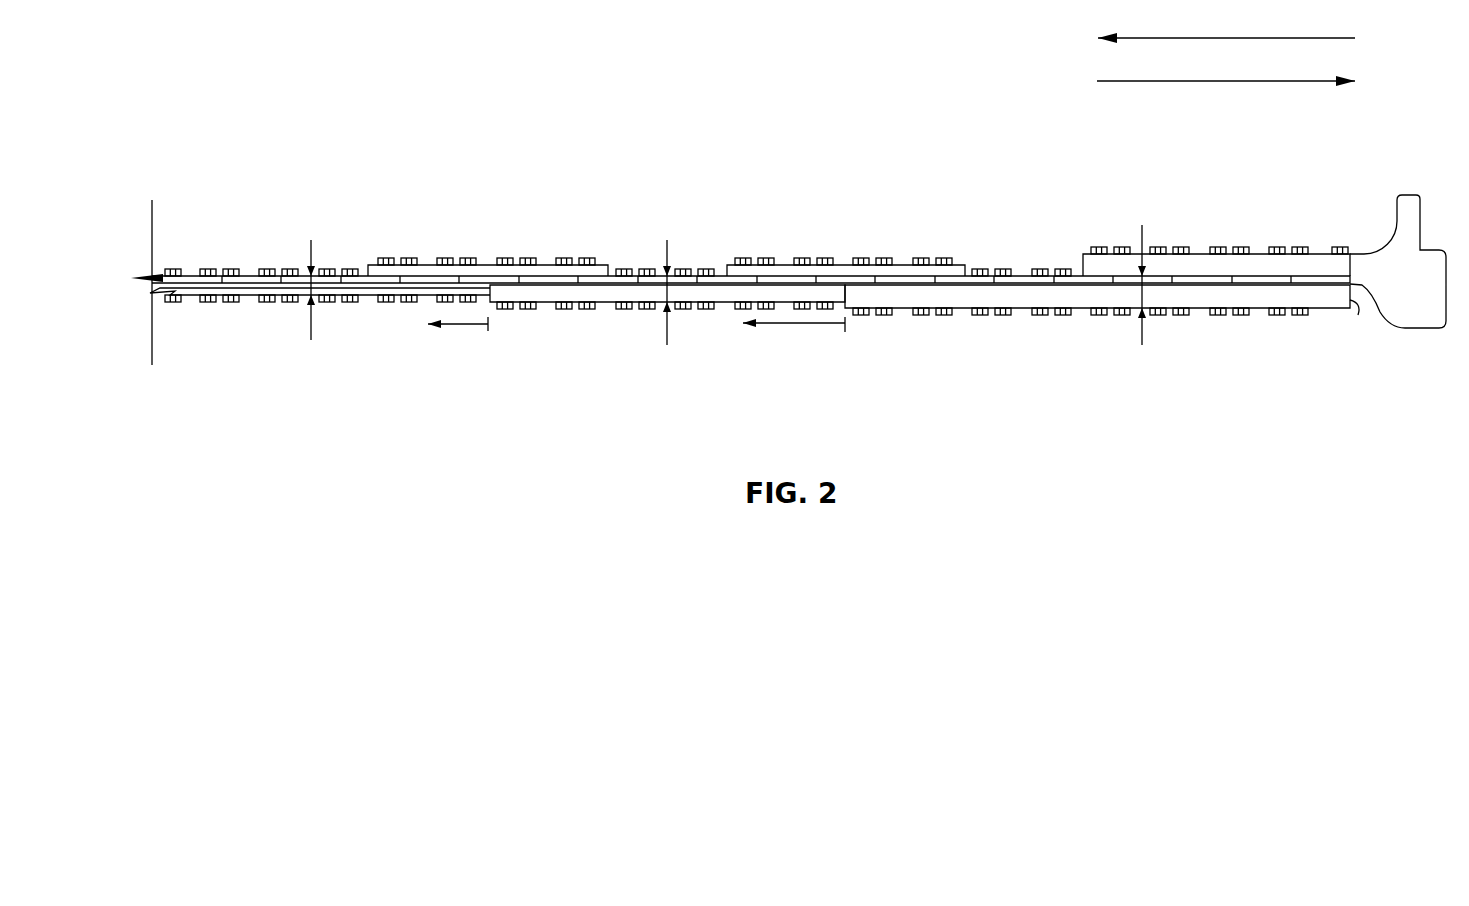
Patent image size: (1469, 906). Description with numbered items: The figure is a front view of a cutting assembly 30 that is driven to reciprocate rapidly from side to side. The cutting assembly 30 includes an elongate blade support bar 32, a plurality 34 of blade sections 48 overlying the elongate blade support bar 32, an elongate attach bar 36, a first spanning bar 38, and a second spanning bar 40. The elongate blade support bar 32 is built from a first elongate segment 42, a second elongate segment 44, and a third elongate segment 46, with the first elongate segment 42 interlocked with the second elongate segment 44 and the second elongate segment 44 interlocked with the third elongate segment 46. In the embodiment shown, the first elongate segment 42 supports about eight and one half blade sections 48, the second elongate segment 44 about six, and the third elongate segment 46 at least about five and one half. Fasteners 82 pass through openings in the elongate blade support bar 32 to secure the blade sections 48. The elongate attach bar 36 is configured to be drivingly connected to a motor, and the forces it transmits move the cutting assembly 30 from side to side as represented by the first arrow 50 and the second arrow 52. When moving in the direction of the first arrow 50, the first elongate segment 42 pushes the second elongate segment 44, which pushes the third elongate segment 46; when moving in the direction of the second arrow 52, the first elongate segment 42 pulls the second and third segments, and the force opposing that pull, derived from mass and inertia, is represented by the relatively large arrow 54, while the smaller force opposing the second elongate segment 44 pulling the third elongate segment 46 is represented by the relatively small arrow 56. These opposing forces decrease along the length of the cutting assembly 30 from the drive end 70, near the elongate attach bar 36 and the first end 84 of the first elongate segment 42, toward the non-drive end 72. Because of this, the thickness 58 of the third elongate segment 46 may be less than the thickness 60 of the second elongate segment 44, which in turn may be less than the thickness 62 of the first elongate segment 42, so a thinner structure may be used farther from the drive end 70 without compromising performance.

The cutting assembly 30 is at (300, 88).
The elongate blade support bar 32 is at (247, 292).
The plurality of blade sections 34 is at (197, 277).
The elongate attach bar 36 is at (1268, 262).
The first spanning bar 38 is at (845, 270).
The second spanning bar 40 is at (493, 268).
The first elongate segment 42 is at (1018, 298).
The second elongate segment 44 is at (720, 294).
The third elongate segment 46 is at (365, 292).
The blade section 48 is at (423, 278).
The first arrow 50 is at (1225, 38).
The second arrow 52 is at (1225, 82).
The relatively large arrow 54 is at (812, 328).
The relatively small arrow 56 is at (467, 328).
The thickness of third elongate segment 58 is at (313, 317).
The thickness of second elongate segment 60 is at (668, 328).
The thickness of first elongate segment 62 is at (1143, 240).
The drive end 70 is at (1351, 286).
The non-drive end 72 is at (165, 291).
The fastener 82 is at (172, 305).
The first end 84 is at (1358, 315).